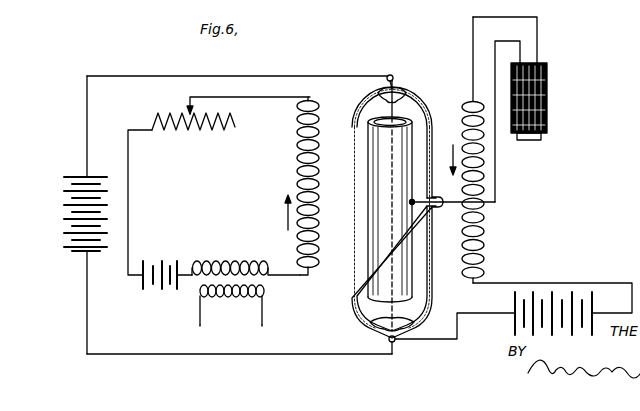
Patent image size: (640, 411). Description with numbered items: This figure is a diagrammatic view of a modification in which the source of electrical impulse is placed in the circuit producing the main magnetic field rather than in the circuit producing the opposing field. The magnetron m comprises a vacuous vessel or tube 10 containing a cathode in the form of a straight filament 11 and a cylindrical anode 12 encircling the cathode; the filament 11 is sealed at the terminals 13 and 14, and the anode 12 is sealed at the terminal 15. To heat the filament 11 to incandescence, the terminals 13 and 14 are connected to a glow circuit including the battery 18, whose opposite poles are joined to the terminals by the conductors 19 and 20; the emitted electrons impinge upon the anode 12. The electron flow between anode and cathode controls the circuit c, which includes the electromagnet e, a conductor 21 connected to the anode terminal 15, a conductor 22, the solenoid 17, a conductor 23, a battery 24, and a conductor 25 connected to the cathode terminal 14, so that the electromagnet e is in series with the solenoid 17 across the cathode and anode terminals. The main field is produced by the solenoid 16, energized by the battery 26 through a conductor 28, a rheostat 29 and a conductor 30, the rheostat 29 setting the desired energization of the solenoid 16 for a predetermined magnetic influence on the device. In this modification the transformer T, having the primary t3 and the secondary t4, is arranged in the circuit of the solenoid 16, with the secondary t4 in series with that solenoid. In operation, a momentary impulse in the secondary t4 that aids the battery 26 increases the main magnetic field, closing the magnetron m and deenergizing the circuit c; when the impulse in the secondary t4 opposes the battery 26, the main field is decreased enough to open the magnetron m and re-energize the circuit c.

The vacuous vessel or tube 10 is at (430, 118).
The filament 11 is at (389, 76).
The cylindrical anode 12 is at (368, 176).
The terminal 13 is at (388, 81).
The terminal 14 is at (396, 343).
The terminal 15 is at (437, 208).
The solenoid 16 is at (297, 170).
The solenoid 17 is at (484, 185).
The battery 18 is at (62, 226).
The conductor 19 is at (330, 76).
The conductor 20 is at (237, 354).
The conductor 21 is at (497, 202).
The conductor 22 is at (500, 17).
The conductor 23 is at (543, 283).
The battery 24 is at (518, 333).
The conductor 25 is at (438, 332).
The battery 26 is at (165, 260).
The conductor 28 is at (287, 97).
The rheostat 29 is at (210, 131).
The conductor 30 is at (128, 198).
The magnetron m is at (413, 92).
The circuit c is at (495, 172).
The electromagnet e is at (548, 90).
The primary t3 is at (232, 305).
The secondary t4 is at (236, 262).
The transformer T is at (245, 303).